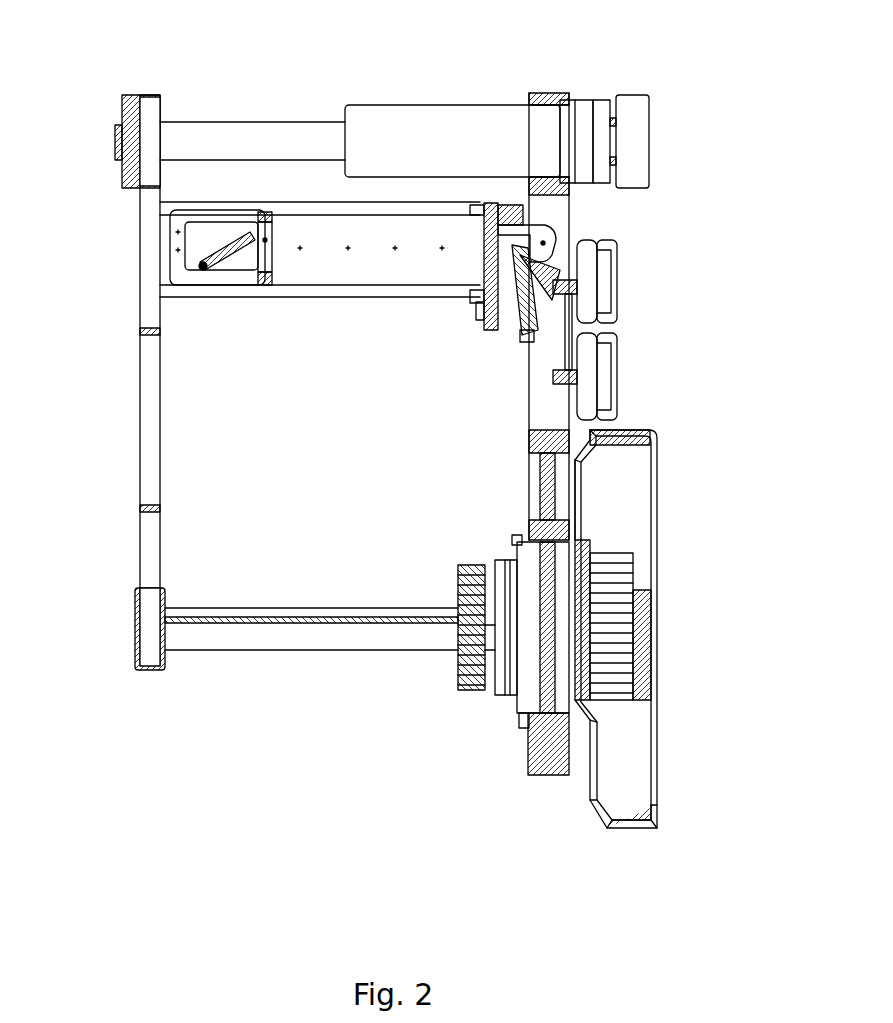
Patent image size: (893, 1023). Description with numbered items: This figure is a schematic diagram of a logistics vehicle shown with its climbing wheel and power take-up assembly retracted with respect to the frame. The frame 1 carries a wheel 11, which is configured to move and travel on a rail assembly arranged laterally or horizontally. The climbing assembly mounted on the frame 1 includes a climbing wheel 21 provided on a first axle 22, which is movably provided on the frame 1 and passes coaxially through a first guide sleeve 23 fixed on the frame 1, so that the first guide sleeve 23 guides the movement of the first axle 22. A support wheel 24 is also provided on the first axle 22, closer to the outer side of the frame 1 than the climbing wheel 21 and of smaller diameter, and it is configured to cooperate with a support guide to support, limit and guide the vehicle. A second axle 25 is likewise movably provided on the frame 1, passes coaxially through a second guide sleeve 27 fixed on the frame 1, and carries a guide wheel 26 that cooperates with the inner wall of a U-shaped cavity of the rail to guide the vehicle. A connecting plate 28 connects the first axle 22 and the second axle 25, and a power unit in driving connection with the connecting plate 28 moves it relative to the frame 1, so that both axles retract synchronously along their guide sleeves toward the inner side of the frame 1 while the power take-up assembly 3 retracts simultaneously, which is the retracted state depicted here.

The frame 1 is at (548, 452).
The power take-up assembly 3 is at (320, 255).
The wheel 11 is at (607, 760).
The climbing wheel 21 is at (630, 565).
The first axle 22 is at (312, 633).
The first guide sleeve 23 is at (492, 648).
The support wheel 24 is at (640, 643).
The second axle 25 is at (293, 143).
The guide wheel 26 is at (633, 118).
The second guide sleeve 27 is at (450, 140).
The connecting plate 28 is at (150, 402).